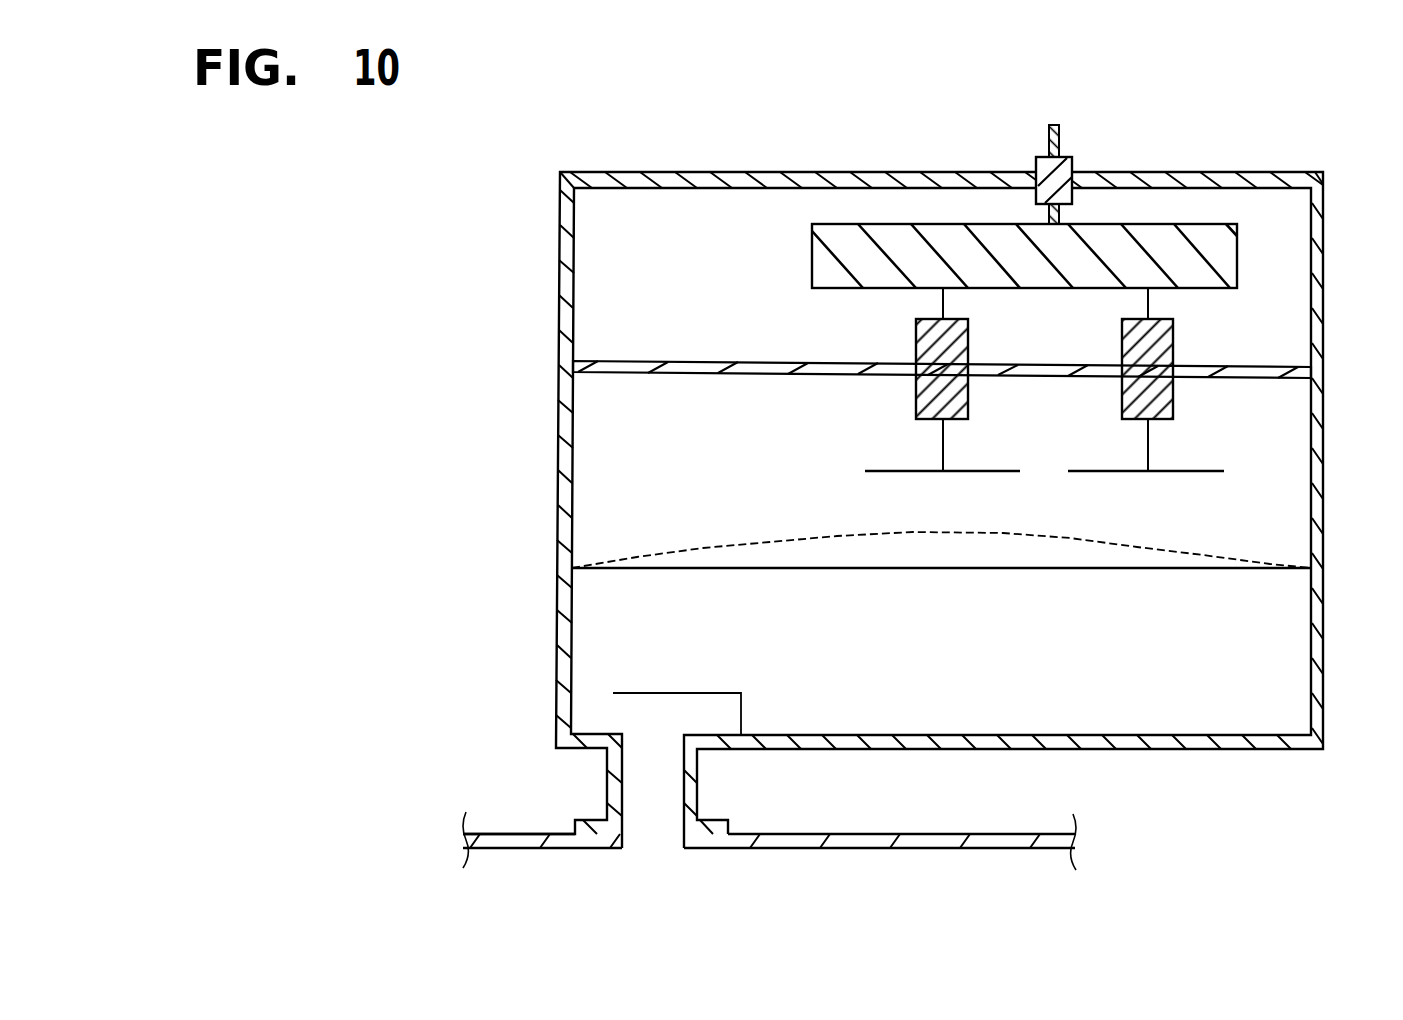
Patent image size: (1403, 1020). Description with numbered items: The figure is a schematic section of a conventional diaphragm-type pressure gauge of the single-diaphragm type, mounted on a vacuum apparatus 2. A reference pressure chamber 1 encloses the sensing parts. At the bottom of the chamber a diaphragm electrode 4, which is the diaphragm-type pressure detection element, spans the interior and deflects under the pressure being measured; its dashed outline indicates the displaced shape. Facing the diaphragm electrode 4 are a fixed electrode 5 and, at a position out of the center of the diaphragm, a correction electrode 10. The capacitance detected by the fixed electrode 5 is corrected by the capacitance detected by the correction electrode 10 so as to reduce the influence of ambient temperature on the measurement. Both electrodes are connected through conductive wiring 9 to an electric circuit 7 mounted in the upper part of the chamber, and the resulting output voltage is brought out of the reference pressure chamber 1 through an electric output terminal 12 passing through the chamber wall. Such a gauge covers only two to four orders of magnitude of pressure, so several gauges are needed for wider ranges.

The reference pressure chamber 1 is at (1300, 509).
The vacuum apparatus 2 is at (786, 849).
The diaphragm electrode 4 is at (688, 570).
The fixed electrode 5 is at (903, 471).
The electric circuit 7 is at (1165, 238).
The conductive wiring 9 is at (943, 302).
The correction electrode 10 is at (1197, 472).
The electric output terminal 12 is at (1057, 132).